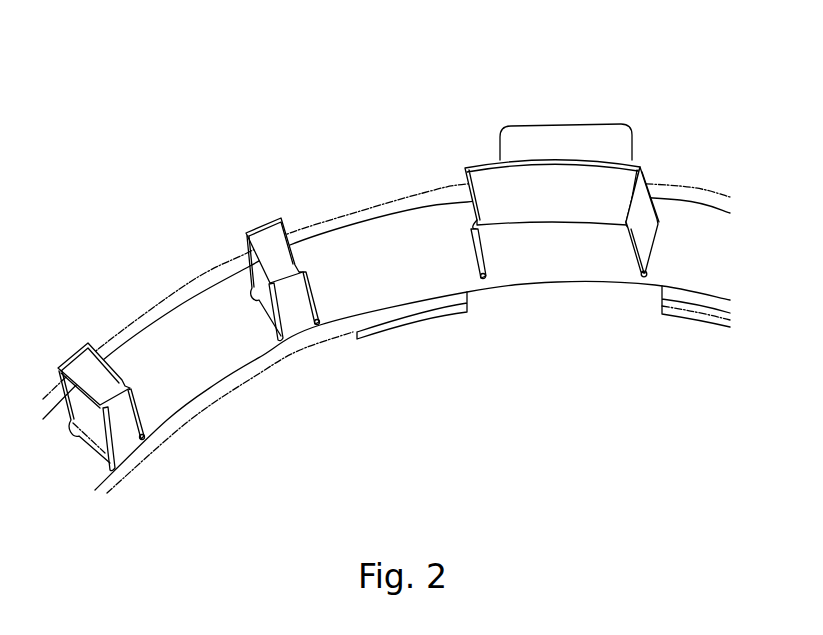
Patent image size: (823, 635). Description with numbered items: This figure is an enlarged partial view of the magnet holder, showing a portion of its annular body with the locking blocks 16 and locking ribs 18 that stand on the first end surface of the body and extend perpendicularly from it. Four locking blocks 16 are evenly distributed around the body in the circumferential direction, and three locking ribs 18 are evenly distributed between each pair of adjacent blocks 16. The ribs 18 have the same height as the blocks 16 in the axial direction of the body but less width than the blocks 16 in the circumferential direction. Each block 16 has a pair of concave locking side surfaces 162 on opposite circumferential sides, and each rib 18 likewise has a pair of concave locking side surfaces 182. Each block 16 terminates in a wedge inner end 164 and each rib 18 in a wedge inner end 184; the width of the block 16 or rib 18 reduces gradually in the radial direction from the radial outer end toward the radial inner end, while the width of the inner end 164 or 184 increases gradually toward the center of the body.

The locking block 16 is at (558, 187).
The concave locking side surface 162 is at (588, 229).
The wedge inner end 164 is at (493, 228).
The locking rib 18 is at (221, 270).
The concave locking side surface 182 is at (288, 242).
The wedge inner end 184 is at (130, 388).